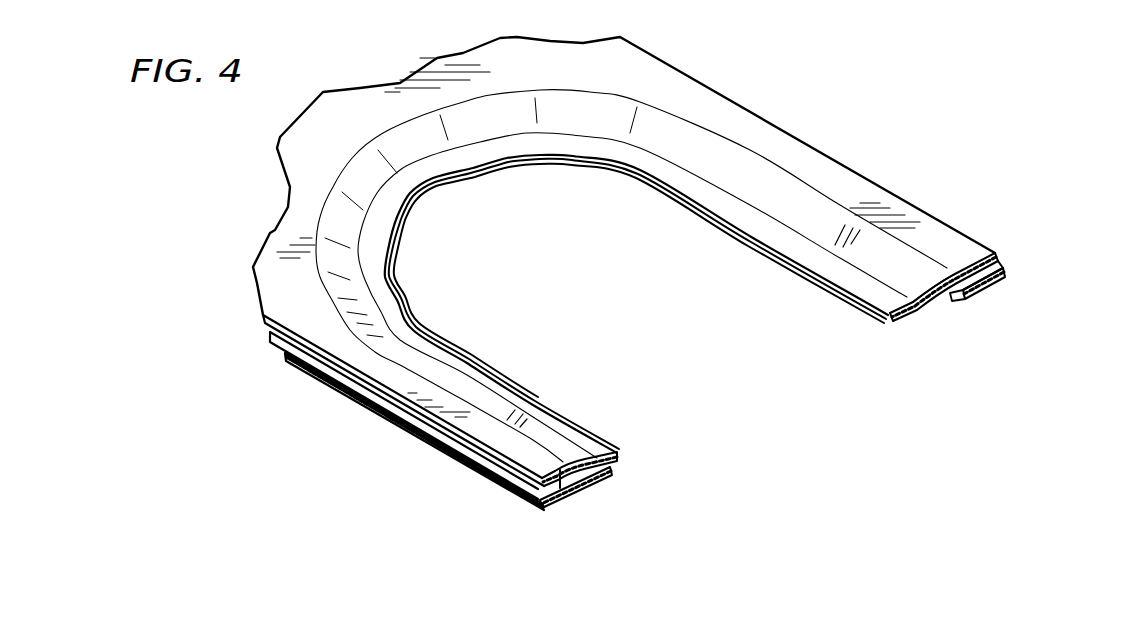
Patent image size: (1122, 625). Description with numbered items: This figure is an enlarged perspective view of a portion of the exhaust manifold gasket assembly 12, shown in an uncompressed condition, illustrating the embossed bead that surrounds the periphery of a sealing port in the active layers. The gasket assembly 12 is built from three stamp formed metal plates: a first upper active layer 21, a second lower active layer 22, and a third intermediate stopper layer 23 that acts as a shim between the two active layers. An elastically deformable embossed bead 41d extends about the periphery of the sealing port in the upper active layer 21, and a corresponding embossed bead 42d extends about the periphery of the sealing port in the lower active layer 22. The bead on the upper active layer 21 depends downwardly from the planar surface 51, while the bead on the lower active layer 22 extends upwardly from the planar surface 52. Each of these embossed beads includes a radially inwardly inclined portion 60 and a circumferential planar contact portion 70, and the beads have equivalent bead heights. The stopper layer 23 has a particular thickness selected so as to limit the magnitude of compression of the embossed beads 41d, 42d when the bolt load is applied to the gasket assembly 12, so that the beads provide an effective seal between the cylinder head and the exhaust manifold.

The exhaust manifold gasket assembly 12 is at (228, 198).
The embossed bead 41d is at (667, 110).
The embossed bead 42d is at (610, 170).
The radially inwardly inclined portion 60 is at (810, 210).
The first upper active layer 21 is at (816, 320).
The second lower active layer 22 is at (807, 384).
The third intermediate stopper layer 23 is at (997, 278).
The planar surface 51 is at (995, 253).
The planar surface 52 is at (953, 292).
The circumferential planar contact portion 70 is at (790, 244).